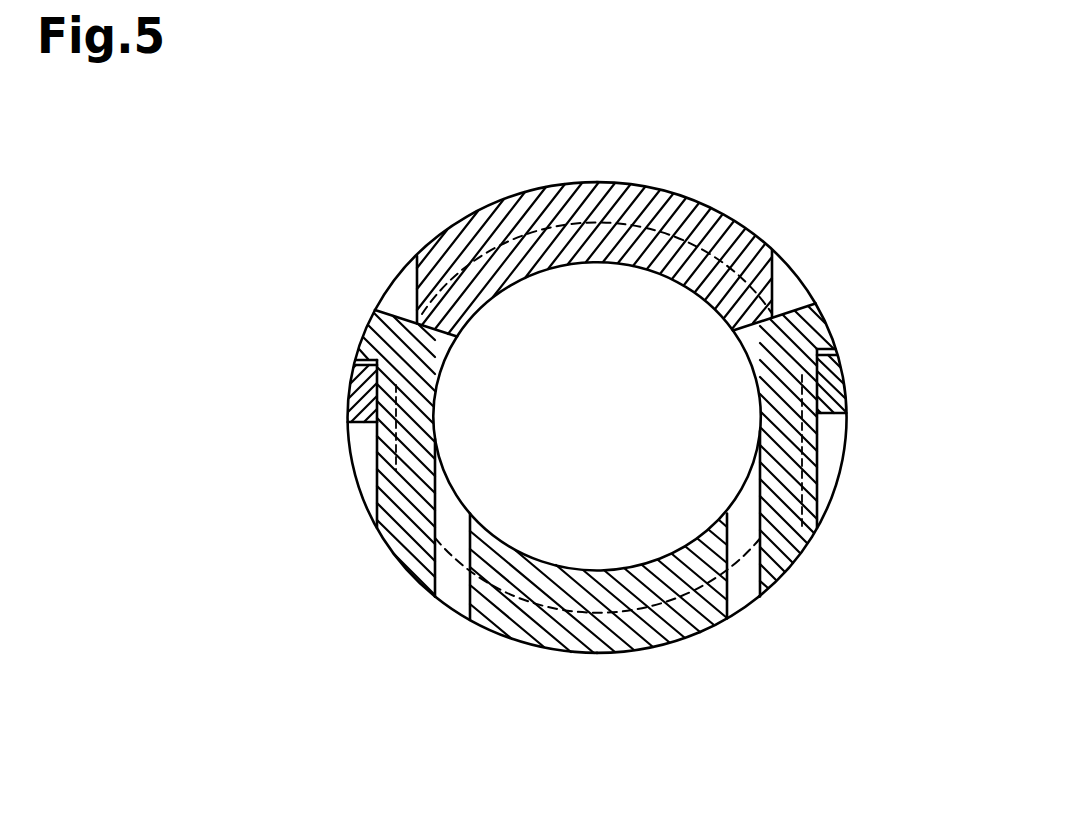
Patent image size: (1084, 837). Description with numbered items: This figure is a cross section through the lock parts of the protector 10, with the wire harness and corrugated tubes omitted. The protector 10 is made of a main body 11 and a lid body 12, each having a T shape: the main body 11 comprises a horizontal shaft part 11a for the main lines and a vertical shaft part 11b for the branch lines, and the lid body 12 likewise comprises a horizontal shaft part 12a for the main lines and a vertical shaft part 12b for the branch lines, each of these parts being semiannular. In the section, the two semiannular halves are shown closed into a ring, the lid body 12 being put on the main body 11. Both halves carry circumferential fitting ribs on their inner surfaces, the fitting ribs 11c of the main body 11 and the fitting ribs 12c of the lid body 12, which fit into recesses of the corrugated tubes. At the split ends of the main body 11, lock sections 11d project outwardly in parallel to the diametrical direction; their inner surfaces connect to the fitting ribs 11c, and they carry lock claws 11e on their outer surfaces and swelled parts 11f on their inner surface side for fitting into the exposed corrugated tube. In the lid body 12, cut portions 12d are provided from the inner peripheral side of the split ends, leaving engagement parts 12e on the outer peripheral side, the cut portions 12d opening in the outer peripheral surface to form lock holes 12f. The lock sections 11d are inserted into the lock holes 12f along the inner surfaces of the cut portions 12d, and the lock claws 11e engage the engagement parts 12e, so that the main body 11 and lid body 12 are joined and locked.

The protector 10 is at (97, 425).
The main body 11 is at (397, 548).
The horizontal shaft part for the main lines 11a is at (573, 653).
The vertical shaft part for the branch lines 11b is at (648, 642).
The fitting ribs 11c is at (717, 625).
The lock sections 11d is at (350, 450).
The lock claws 11e is at (358, 346).
The swelled parts 11f is at (350, 404).
The lid body 12 is at (449, 230).
The horizontal shaft part for the main lines 12a is at (657, 186).
The vertical shaft part for the branch lines 12b is at (706, 242).
The fitting ribs 12c is at (540, 248).
The cut portions 12d is at (383, 420).
The engagement parts 12e is at (353, 360).
The lock holes 12f is at (398, 298).